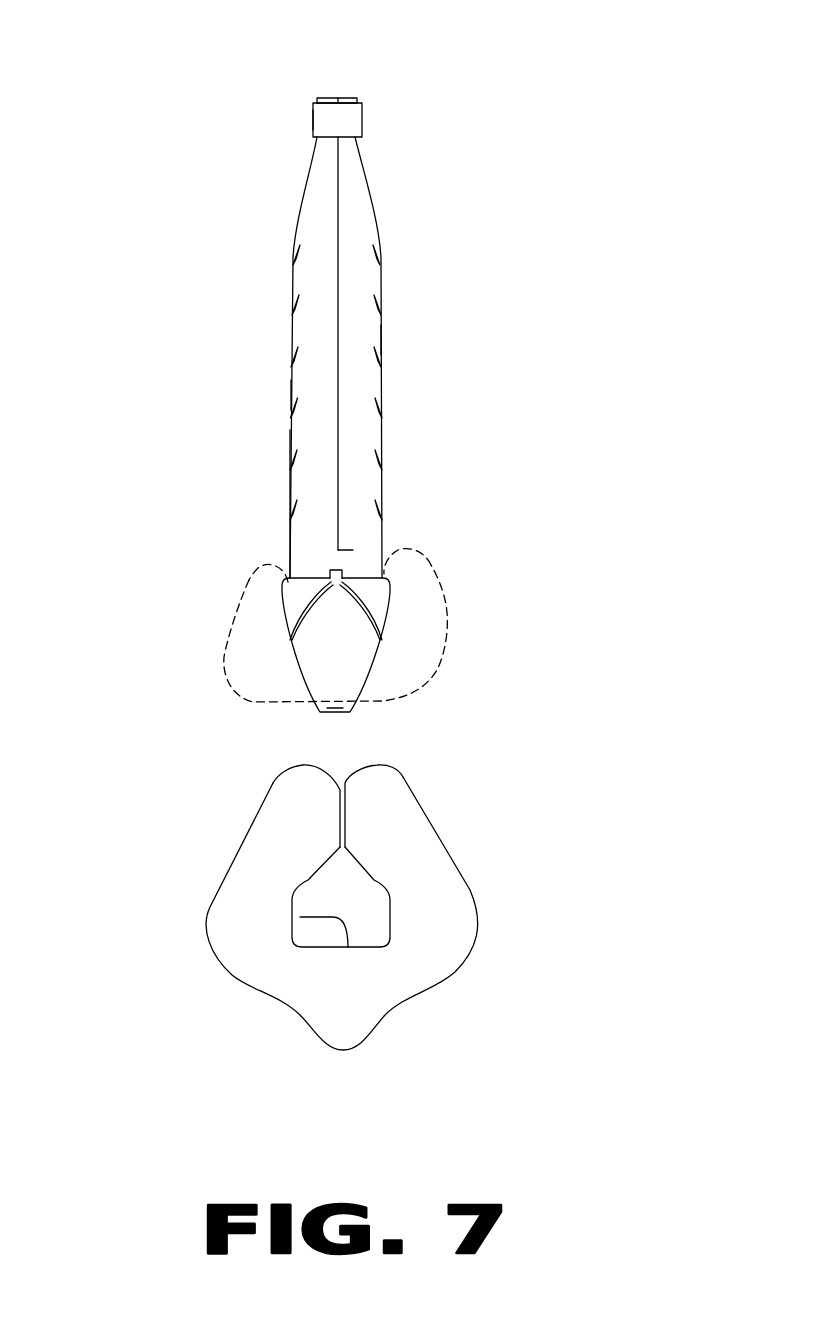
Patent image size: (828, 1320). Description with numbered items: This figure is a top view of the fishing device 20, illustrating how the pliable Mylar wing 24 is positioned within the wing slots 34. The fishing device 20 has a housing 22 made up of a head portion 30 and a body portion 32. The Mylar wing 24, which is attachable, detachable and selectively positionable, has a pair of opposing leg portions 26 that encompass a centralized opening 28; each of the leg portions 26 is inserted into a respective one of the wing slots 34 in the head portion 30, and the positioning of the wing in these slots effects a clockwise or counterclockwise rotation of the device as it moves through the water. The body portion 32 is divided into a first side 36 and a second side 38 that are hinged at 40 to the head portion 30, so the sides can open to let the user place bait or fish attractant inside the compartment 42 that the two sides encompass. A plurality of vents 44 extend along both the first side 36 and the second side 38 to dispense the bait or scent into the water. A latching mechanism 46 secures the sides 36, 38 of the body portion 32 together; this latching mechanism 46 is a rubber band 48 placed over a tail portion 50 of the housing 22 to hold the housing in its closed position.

The fishing device 20 is at (512, 383).
The housing 22 is at (280, 230).
The pliable Mylar wing 24 is at (462, 608).
The leg portions 26 is at (243, 603).
The centralized opening 28 is at (305, 917).
The head portion 30 is at (350, 662).
The body portion 32 is at (268, 456).
The wing slots 34 is at (390, 578).
The first side 36 is at (297, 395).
The second side 38 is at (363, 340).
The hinge 40 is at (353, 550).
The compartment 42 is at (353, 193).
The vents 44 is at (293, 357).
The latching mechanism 46 is at (376, 119).
The rubber band 48 is at (323, 121).
The tail portion 50 is at (328, 98).